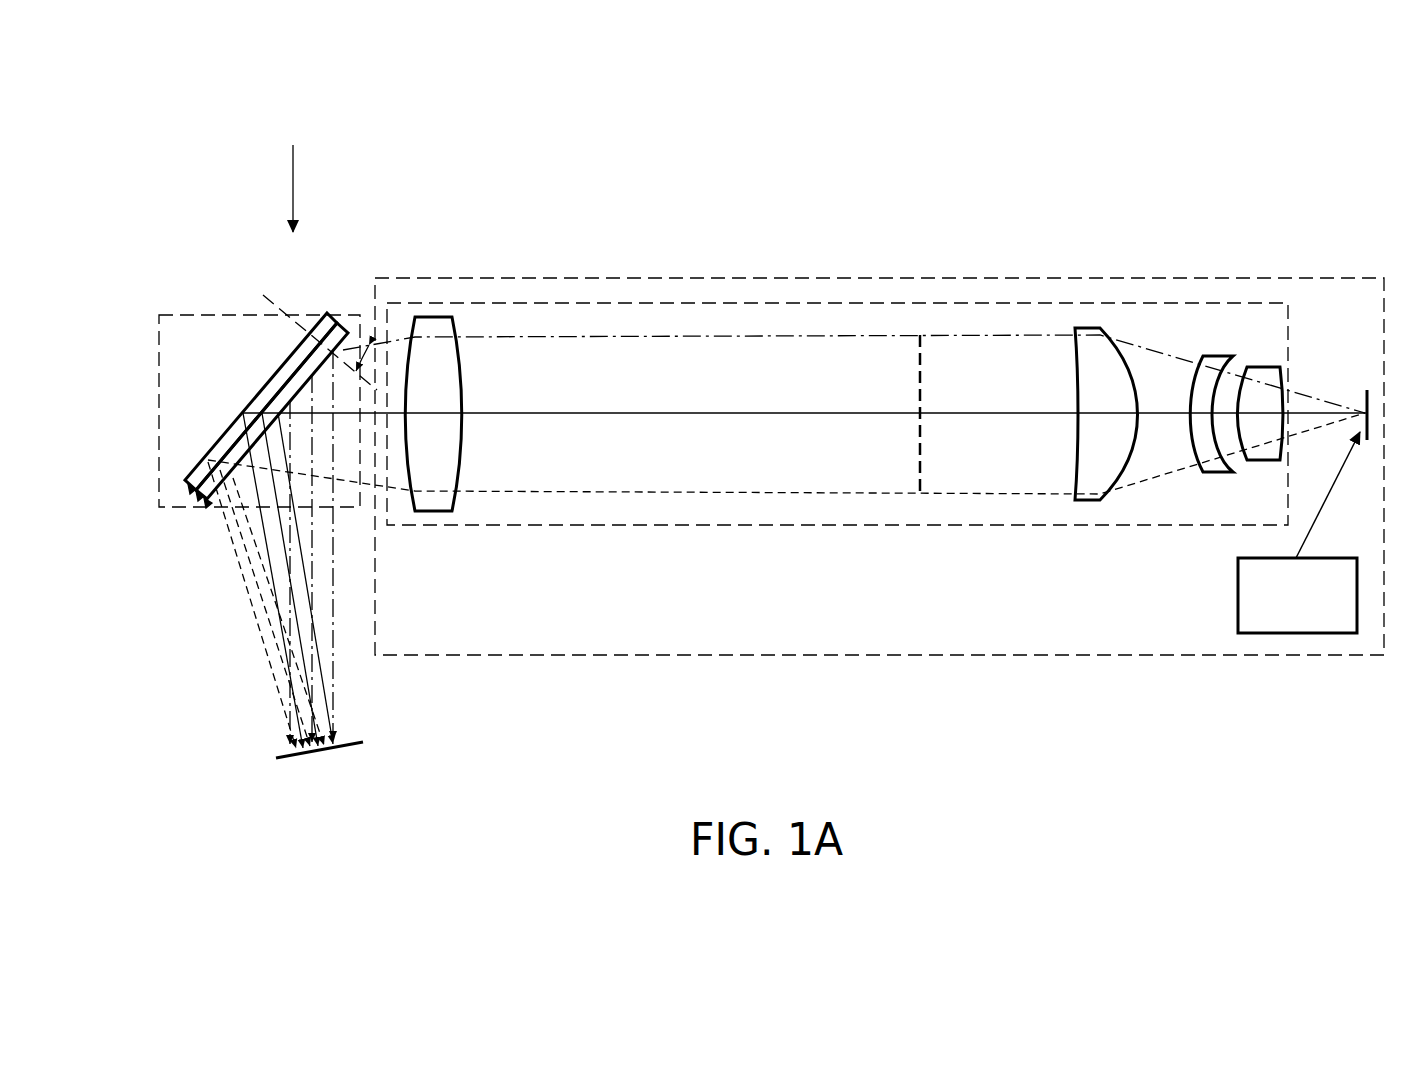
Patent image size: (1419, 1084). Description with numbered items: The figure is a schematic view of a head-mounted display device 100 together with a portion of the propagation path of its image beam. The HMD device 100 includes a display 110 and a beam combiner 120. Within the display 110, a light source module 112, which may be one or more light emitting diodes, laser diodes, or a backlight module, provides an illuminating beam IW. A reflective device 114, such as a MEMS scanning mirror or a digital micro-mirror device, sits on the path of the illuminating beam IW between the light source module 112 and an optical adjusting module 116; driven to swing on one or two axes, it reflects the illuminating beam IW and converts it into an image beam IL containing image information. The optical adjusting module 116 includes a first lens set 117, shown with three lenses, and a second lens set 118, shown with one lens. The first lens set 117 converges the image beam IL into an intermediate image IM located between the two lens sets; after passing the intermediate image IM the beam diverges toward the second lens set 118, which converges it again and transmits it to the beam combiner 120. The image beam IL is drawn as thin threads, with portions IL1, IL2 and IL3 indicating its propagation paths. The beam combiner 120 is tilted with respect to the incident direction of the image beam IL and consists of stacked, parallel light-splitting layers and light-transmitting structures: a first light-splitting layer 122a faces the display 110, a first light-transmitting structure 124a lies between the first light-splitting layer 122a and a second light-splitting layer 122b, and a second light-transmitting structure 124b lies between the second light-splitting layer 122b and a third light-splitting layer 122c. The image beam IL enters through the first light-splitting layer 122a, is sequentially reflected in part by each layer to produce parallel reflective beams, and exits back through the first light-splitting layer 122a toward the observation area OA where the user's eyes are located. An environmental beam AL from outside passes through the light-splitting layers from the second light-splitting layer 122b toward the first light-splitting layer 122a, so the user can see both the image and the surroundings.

The head-mounted display device 100 is at (1332, 796).
The display 110 is at (1197, 278).
The light source module 112 is at (1304, 618).
The reflective device 114 is at (1368, 393).
The optical adjusting module 116 is at (1102, 304).
The first lens set 117 is at (1265, 462).
The second lens set 118 is at (435, 512).
The beam combiner 120 is at (217, 312).
The first light-splitting layer 122a is at (209, 506).
The second light-splitting layer 122b is at (200, 500).
The third light-splitting layer 122c is at (190, 492).
The first light-transmitting structure 124a is at (339, 322).
The second light-transmitting structure 124b is at (331, 316).
The environmental beam AL is at (294, 186).
The observation area OA is at (370, 739).
The intermediate image IM is at (925, 424).
The illuminating beam IW is at (1327, 502).
The image beam IL is at (790, 675).
The portion of the image beam IL1 is at (698, 337).
The portion of the image beam IL2 is at (665, 413).
The portion of the image beam IL3 is at (649, 492).